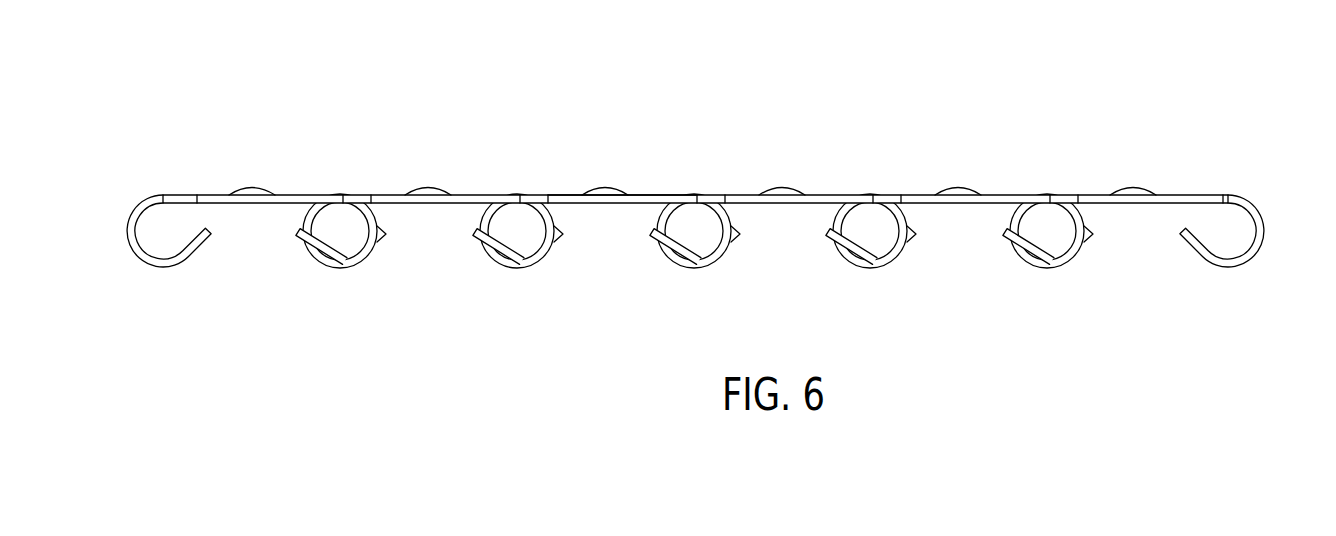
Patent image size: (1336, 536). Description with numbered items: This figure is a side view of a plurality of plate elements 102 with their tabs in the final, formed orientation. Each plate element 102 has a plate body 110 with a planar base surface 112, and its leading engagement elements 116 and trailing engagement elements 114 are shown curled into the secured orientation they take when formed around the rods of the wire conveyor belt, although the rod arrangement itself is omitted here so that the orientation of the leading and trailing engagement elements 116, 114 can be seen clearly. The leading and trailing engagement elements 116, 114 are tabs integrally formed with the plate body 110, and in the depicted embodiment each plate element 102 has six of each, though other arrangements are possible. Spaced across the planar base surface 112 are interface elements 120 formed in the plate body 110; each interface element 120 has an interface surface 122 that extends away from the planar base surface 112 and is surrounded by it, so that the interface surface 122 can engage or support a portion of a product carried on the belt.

The plate element 102 is at (398, 150).
The plate body 110 is at (638, 200).
The planar base surface 112 is at (572, 193).
The trailing engagement elements 114 is at (135, 199).
The leading engagement elements 116 is at (1257, 212).
The interface elements 120 is at (950, 193).
The interface surface 122 is at (776, 192).